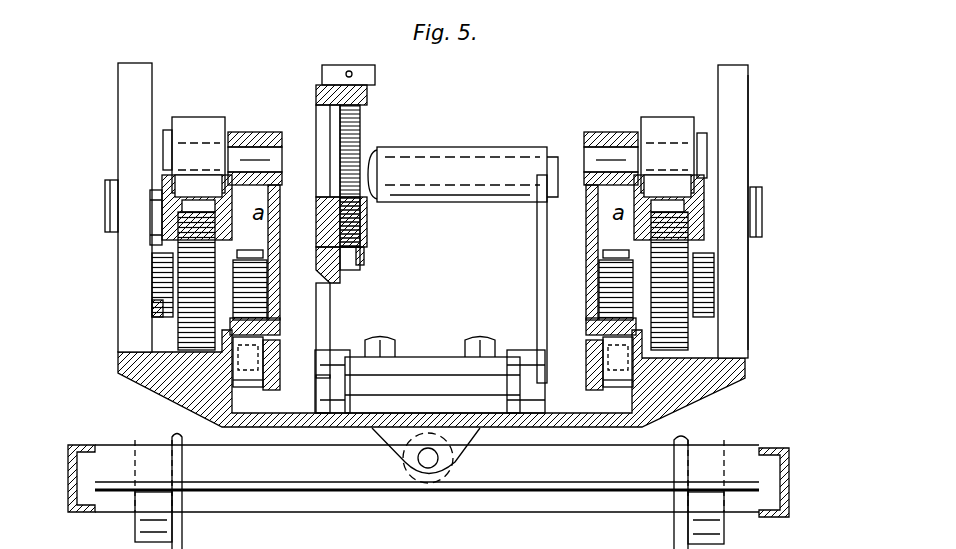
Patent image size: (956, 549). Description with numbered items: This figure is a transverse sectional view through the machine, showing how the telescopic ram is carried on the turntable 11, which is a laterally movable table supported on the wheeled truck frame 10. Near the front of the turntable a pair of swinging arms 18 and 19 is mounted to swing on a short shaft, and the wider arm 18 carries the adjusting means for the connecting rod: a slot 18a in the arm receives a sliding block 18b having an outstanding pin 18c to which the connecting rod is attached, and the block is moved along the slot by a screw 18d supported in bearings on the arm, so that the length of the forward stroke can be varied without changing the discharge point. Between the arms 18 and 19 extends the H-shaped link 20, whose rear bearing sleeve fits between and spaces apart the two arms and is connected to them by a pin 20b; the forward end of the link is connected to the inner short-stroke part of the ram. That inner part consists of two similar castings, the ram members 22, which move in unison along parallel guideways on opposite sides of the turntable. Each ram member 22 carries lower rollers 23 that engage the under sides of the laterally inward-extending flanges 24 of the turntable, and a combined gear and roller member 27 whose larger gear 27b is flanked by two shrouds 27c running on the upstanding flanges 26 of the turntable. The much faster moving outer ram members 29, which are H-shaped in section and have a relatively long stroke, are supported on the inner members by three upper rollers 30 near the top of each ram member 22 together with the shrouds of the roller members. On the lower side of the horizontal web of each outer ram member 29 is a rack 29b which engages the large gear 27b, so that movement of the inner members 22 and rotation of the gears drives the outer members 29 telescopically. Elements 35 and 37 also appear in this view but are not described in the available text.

The truck frame 10 is at (70, 500).
The turntable 11 is at (565, 430).
The swinging arm 18 is at (331, 302).
The slot 18a is at (322, 133).
The sliding block 18b is at (368, 230).
The outstanding pin 18c is at (326, 265).
The screw 18d is at (362, 120).
The swinging arm 19 is at (537, 272).
The link 20 is at (316, 385).
The pin 20b is at (386, 172).
The ram member 22 is at (282, 180).
The lower roller 23 is at (246, 388).
The flange 24 is at (290, 345).
The upstanding flange 26 is at (160, 318).
The combined gear and roller member 27 is at (245, 262).
The gear 27b is at (190, 262).
The shroud 27c is at (180, 245).
The outer ram member 29 is at (165, 195).
The rack 29b is at (168, 222).
The upper roller 30 is at (198, 128).
The knob 35 is at (762, 213).
The side plate 37 is at (750, 130).